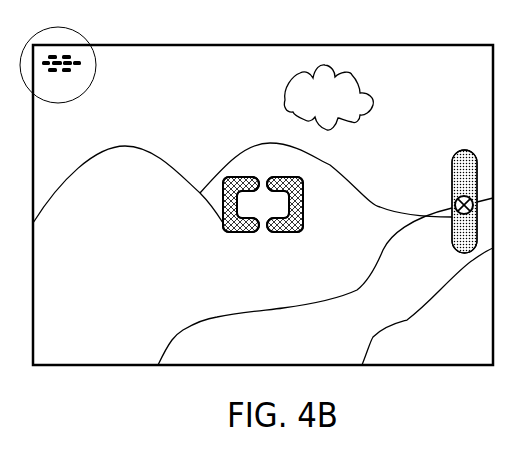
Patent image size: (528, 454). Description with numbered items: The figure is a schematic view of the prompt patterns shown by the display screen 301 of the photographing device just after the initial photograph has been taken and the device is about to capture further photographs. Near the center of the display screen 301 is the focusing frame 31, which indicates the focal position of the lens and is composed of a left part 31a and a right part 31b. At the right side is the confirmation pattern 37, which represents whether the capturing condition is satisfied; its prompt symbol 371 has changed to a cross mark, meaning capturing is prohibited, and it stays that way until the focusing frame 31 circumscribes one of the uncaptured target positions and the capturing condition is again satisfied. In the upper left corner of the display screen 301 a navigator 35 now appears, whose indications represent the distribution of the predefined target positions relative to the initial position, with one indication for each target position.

The display screen 301 is at (450, 365).
The navigator 35 is at (77, 85).
The focusing frame 31 is at (269, 235).
The left part 31a is at (243, 232).
The right part 31b is at (291, 219).
The confirmation pattern 37 is at (444, 222).
The prompt symbol 371 is at (457, 200).